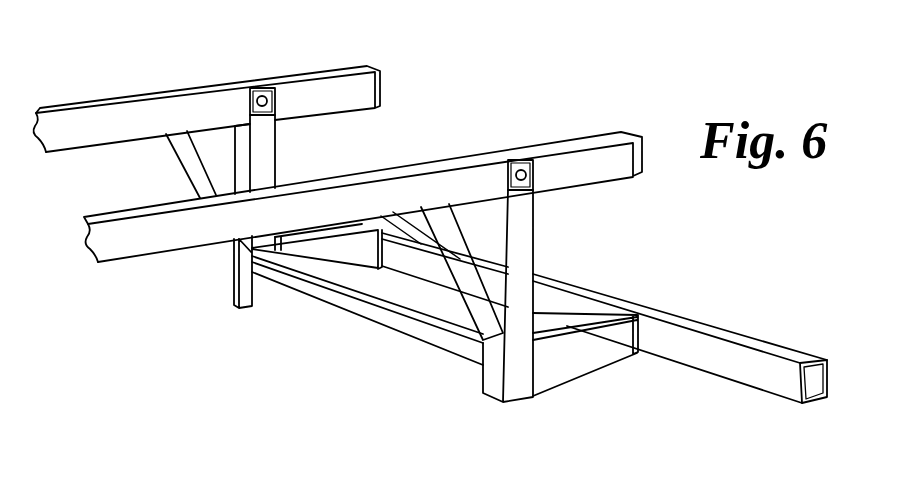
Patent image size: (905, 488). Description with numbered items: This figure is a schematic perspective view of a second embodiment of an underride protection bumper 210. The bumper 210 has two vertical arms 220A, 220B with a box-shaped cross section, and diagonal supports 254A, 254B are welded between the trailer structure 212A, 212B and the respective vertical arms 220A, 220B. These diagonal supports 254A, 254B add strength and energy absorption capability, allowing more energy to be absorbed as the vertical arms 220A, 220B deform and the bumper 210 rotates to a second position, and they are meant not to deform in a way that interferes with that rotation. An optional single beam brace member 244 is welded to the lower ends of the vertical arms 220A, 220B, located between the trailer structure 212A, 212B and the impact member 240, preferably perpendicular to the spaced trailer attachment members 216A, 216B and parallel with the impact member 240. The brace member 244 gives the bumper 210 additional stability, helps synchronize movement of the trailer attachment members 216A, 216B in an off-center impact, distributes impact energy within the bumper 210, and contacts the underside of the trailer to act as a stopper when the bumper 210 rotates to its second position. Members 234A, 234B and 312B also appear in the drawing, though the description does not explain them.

The underride protection bumper 210 is at (716, 406).
The trailer structure 212A is at (447, 157).
The trailer structure 212B is at (132, 122).
The trailer attachment member 216A is at (573, 313).
The trailer attachment member 216B is at (281, 165).
The vertical arm 220A is at (518, 378).
The vertical arm 220B is at (243, 280).
The cross rail 234A is at (580, 350).
The cross rail 234B is at (342, 255).
The impact member 240 is at (717, 326).
The single beam brace member 244 is at (367, 310).
The diagonal support 254A is at (477, 262).
The diagonal support 254B is at (180, 163).
The member 312B is at (152, 487).